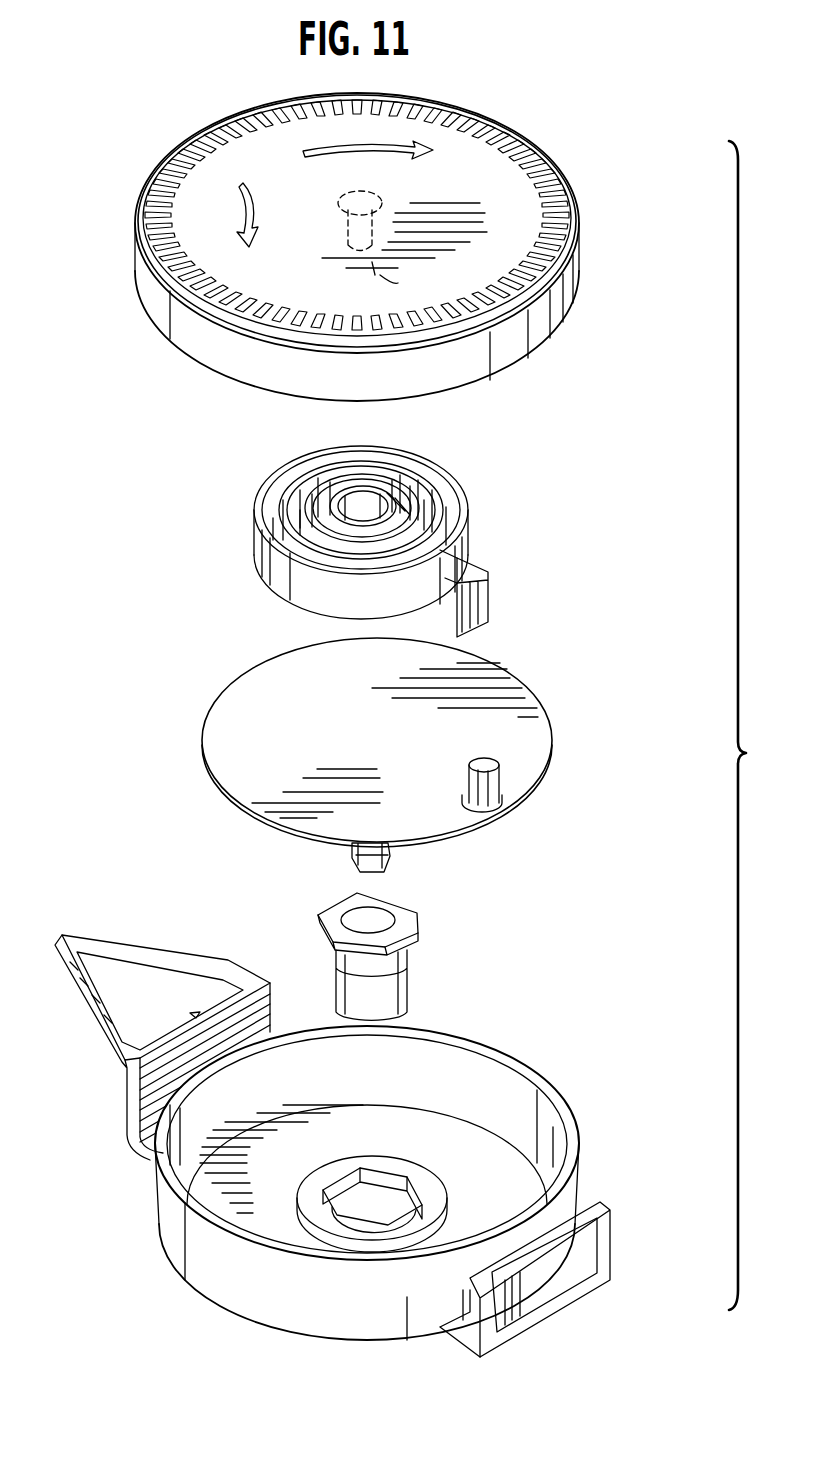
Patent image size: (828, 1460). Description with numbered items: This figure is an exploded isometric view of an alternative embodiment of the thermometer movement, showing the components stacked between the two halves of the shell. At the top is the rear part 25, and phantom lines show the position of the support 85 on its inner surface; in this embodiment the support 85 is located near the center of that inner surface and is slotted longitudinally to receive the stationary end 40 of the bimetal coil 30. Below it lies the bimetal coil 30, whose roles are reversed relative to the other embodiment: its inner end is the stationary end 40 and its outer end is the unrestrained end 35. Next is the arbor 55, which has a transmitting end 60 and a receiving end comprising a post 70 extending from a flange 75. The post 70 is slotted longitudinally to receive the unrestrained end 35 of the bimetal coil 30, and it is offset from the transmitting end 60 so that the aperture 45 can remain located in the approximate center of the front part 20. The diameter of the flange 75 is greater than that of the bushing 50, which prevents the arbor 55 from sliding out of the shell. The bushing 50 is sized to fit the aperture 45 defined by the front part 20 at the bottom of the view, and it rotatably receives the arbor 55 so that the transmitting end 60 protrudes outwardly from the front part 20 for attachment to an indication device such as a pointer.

The front part 20 is at (332, 1146).
The rear part 25 is at (598, 238).
The bimetal coil 30 is at (359, 536).
The unrestrained end 35 is at (488, 596).
The stationary end 40 is at (332, 512).
The aperture 45 is at (423, 1185).
The bushing 50 is at (336, 980).
The arbor 55 is at (379, 760).
The transmitting end 60 is at (392, 858).
The post 70 is at (500, 768).
The flange 75 is at (215, 735).
The support 85 is at (375, 270).